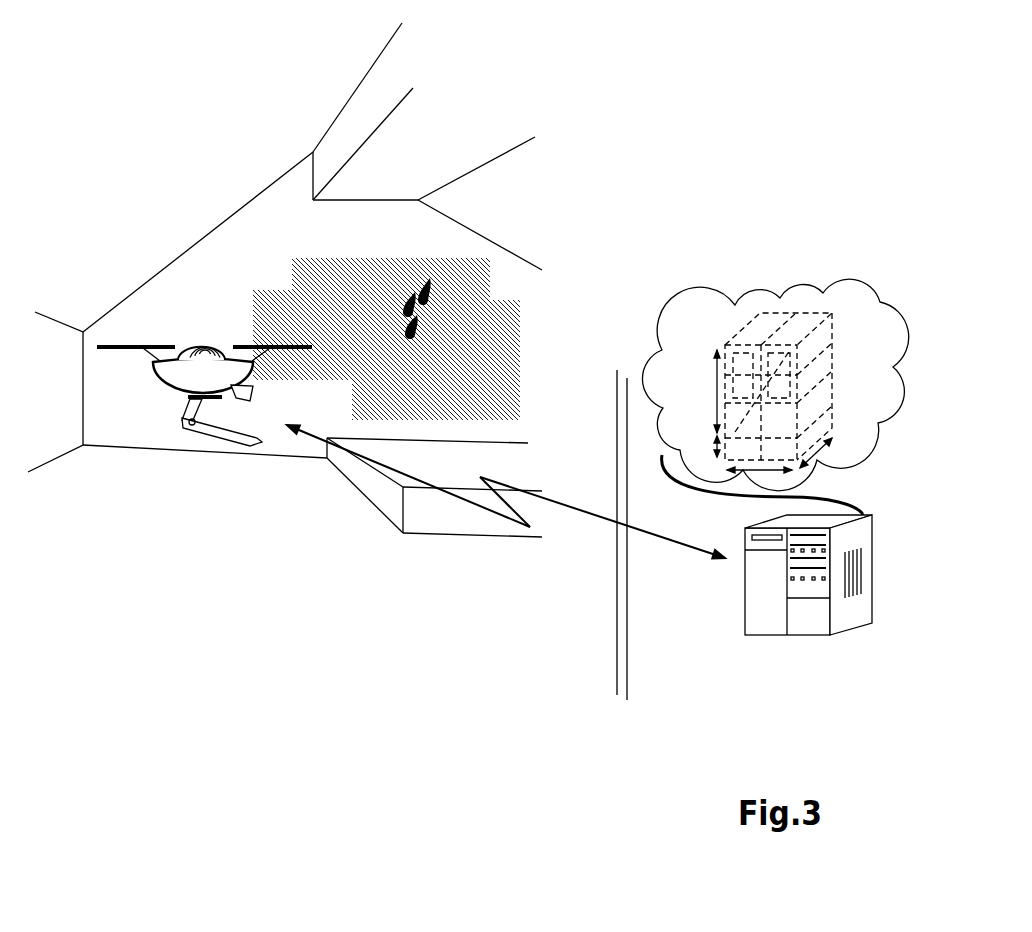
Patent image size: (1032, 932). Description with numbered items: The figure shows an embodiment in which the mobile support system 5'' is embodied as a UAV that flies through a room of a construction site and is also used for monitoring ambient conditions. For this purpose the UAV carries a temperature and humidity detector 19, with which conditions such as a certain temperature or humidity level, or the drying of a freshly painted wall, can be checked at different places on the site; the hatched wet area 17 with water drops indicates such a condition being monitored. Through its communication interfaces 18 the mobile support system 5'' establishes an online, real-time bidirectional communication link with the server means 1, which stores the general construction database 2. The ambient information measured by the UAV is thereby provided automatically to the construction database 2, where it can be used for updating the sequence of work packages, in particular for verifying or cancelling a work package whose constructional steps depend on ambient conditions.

The server means 1 is at (823, 601).
The general construction database 2 is at (775, 345).
The mobile support system 5'' is at (169, 451).
The water leak / damaged wet area 17 is at (385, 289).
The communication interfaces 18 is at (135, 293).
The temperature and humidity detector 19 is at (283, 489).